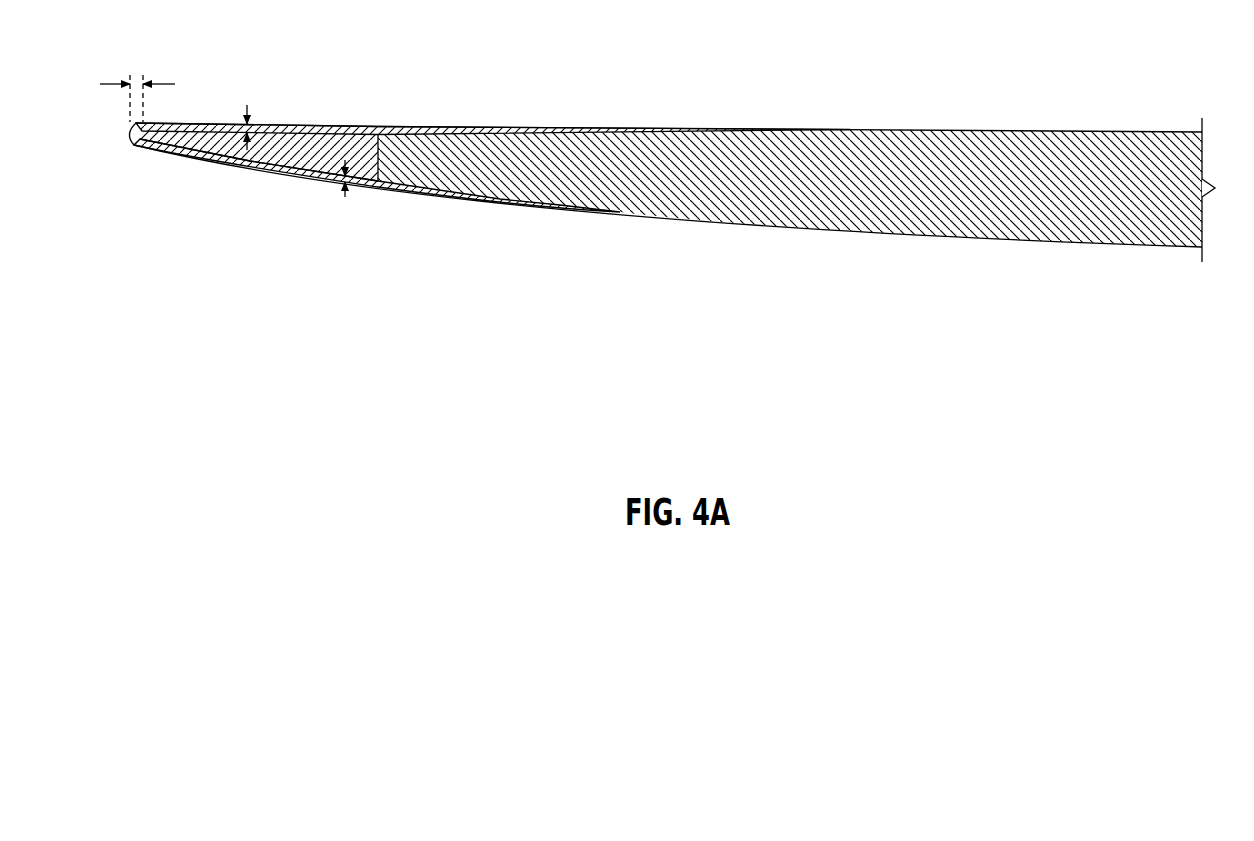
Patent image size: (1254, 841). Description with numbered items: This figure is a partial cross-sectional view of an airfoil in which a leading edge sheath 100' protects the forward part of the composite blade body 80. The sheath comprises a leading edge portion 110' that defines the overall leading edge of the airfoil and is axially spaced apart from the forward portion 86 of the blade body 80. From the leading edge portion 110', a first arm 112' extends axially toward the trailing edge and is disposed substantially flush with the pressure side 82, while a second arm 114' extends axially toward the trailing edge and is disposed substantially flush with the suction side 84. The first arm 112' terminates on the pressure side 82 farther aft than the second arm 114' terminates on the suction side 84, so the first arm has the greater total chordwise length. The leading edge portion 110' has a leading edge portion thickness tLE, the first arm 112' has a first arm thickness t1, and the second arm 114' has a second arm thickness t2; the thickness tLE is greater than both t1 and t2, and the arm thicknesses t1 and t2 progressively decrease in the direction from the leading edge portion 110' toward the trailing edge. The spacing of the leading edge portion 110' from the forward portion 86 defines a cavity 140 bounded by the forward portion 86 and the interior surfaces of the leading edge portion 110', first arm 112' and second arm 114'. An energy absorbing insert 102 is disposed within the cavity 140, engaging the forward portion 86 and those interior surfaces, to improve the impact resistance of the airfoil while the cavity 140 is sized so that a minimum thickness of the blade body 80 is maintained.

The blade body 80 is at (1175, 265).
The pressure side 82 is at (1118, 130).
The suction side 84 is at (1116, 250).
The forward portion 86 is at (363, 160).
The leading edge sheath 100' is at (473, 173).
The leading edge portion 110' is at (125, 164).
The first arm 112' is at (493, 99).
The second arm 114' is at (377, 211).
The energy absorbing insert 102 is at (216, 148).
The cavity 140 is at (318, 184).
The first arm thickness t1 is at (262, 124).
The second arm thickness t2 is at (356, 188).
The leading edge portion thickness tLE is at (137, 81).